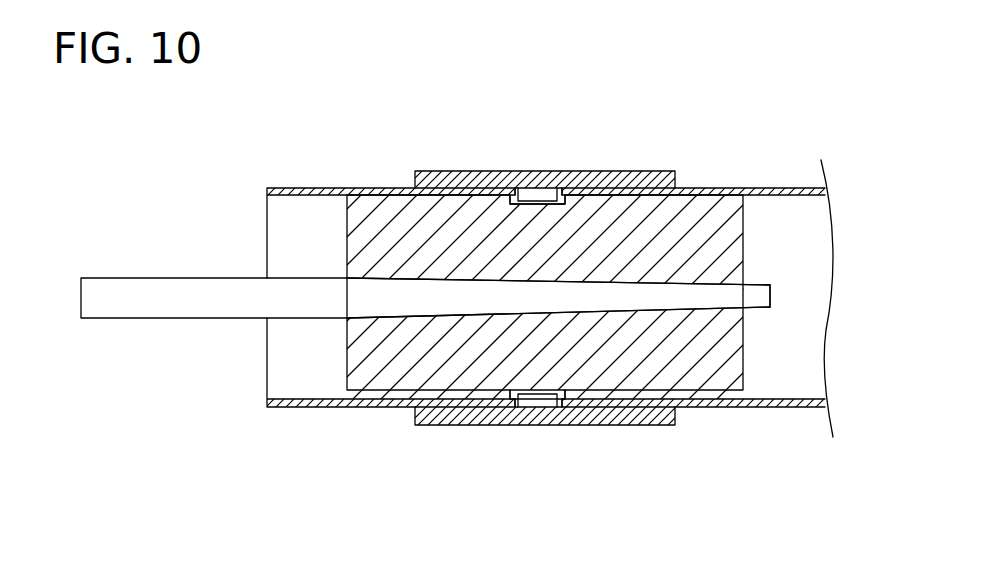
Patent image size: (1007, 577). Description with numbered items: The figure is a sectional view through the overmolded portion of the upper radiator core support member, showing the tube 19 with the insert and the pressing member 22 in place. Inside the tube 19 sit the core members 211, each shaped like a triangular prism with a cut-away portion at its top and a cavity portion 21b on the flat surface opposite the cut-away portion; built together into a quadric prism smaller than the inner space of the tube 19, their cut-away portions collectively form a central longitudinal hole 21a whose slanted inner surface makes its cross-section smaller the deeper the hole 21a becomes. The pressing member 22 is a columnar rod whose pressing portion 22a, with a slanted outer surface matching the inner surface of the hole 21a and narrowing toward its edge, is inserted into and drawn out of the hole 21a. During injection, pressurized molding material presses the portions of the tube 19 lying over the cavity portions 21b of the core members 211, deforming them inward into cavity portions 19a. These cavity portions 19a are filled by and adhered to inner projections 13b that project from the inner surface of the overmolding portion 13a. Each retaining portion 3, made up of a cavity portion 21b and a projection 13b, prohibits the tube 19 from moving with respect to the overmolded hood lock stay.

The retaining portion 3 is at (577, 87).
The overmolding portion 13a is at (440, 171).
The inner projection 13b is at (512, 189).
The tube 19 is at (340, 188).
The cavity portion 19a is at (545, 190).
The longitudinal hole 21a is at (736, 302).
The cavity portion 21b is at (568, 193).
The pressing member 22 is at (155, 278).
The pressing portion 22a is at (405, 300).
The core member 211 is at (705, 200).